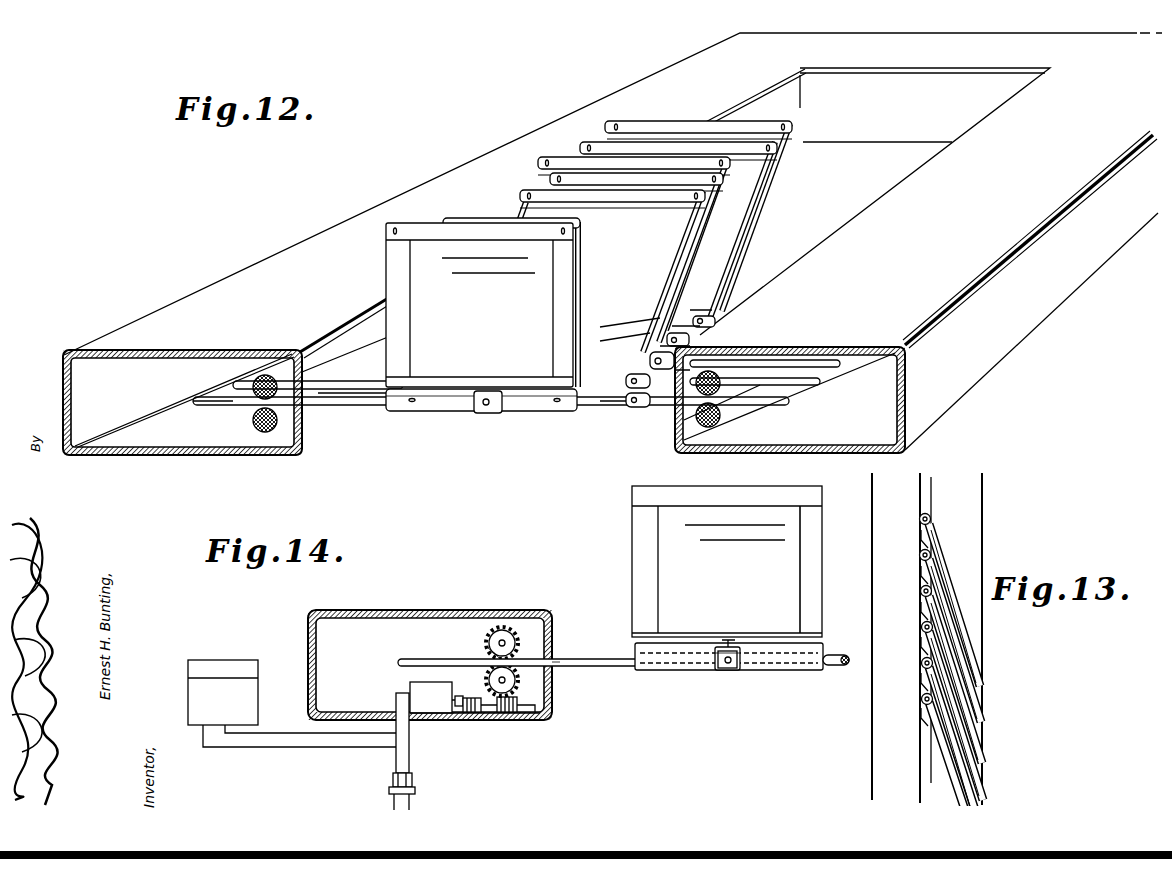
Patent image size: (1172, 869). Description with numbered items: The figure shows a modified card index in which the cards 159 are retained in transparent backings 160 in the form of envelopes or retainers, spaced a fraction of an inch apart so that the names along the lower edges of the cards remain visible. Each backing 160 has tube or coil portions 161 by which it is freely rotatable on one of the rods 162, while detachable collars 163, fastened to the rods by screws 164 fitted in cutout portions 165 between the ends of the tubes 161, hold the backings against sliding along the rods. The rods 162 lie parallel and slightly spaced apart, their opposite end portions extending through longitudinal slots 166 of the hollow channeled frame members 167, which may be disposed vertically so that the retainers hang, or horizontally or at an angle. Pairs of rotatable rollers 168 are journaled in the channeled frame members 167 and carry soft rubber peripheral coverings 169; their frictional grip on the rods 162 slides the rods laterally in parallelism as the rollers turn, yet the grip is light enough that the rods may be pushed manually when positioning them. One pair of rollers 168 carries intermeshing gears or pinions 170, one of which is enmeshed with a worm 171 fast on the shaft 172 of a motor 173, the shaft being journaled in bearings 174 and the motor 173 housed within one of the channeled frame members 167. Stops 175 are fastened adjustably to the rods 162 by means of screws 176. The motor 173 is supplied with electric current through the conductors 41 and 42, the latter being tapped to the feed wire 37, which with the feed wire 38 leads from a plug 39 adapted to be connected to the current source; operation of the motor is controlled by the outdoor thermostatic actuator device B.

In FIG. 12, the cards 159 is at (479, 305).
In FIG. 14, the cards 159 is at (670, 574).
In FIG. 13, the cards 159 is at (968, 655).
In FIG. 12, the backings 160 is at (583, 300).
In FIG. 14, the backings 160 is at (820, 590).
In FIG. 13, the backings 160 is at (953, 635).
In FIG. 12, the tubes 161 is at (547, 412).
In FIG. 14, the tubes 161 is at (788, 670).
In FIG. 13, the tubes 161 is at (933, 522).
In FIG. 12, the rods 162 is at (345, 392).
In FIG. 14, the rods 162 is at (599, 659).
In FIG. 13, the rods 162 is at (920, 522).
In FIG. 12, the collars 163 is at (490, 415).
In FIG. 14, the collars 163 is at (730, 672).
In FIG. 12, the screws 164 is at (472, 408).
In FIG. 14, the screws 164 is at (714, 668).
In FIG. 14, the cutout portions 165 is at (730, 640).
In FIG. 12, the longitudinal slots 166 is at (316, 412).
In FIG. 14, the longitudinal slots 166 is at (610, 656).
In FIG. 13, the longitudinal slots 166 is at (935, 500).
In FIG. 12, the channeled frame members 167 is at (484, 381).
In FIG. 14, the channeled frame members 167 is at (374, 610).
In FIG. 13, the channeled frame members 167 is at (978, 553).
In FIG. 12, the rollers 168 is at (258, 390).
In FIG. 14, the rollers 168 is at (486, 643).
In FIG. 12, the peripheral coverings 169 is at (282, 372).
In FIG. 14, the gears 170 is at (512, 628).
In FIG. 14, the worm 171 is at (508, 716).
In FIG. 14, the shaft 172 is at (470, 716).
In FIG. 14, the motor 173 is at (410, 688).
In FIG. 14, the bearings 174 is at (494, 716).
In FIG. 12, the stops 175 is at (644, 412).
In FIG. 12, the screws 176 is at (632, 392).
In FIG. 14, the conductor 41 is at (376, 720).
In FIG. 14, the conductor 42 is at (409, 726).
In FIG. 14, the feed wire 37 is at (392, 782).
In FIG. 14, the feed wire 38 is at (412, 772).
In FIG. 14, the plug 39 is at (415, 792).
In FIG. 14, the outdoor thermostatic actuator device B is at (243, 648).